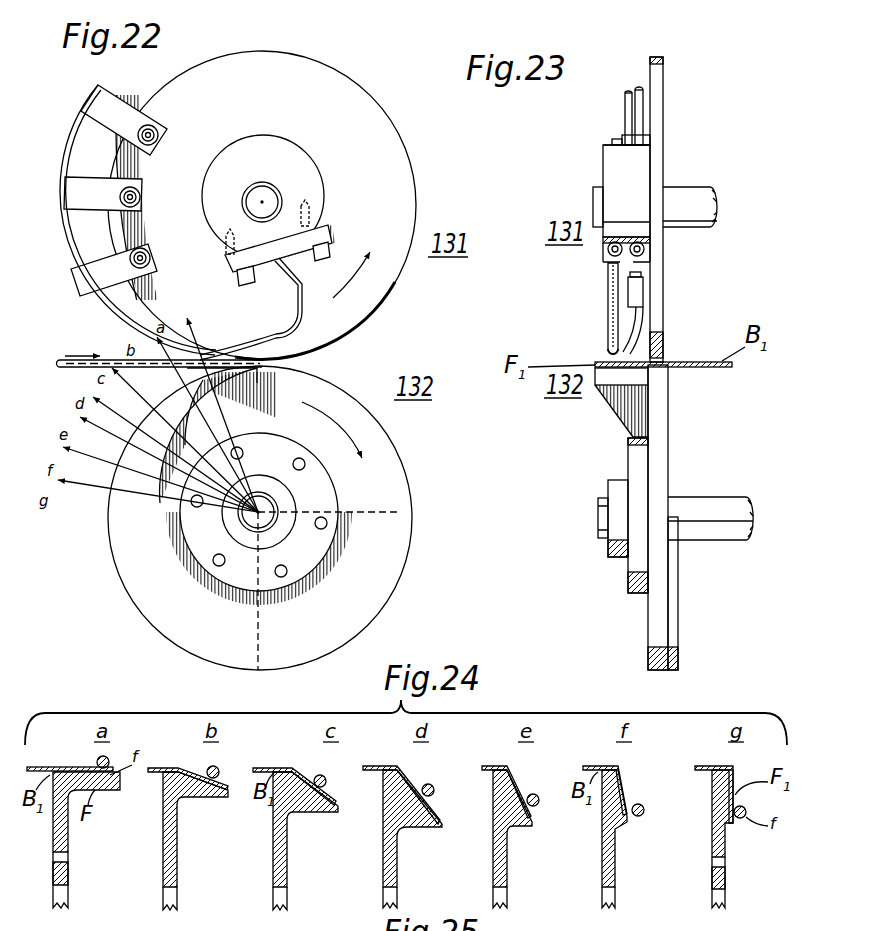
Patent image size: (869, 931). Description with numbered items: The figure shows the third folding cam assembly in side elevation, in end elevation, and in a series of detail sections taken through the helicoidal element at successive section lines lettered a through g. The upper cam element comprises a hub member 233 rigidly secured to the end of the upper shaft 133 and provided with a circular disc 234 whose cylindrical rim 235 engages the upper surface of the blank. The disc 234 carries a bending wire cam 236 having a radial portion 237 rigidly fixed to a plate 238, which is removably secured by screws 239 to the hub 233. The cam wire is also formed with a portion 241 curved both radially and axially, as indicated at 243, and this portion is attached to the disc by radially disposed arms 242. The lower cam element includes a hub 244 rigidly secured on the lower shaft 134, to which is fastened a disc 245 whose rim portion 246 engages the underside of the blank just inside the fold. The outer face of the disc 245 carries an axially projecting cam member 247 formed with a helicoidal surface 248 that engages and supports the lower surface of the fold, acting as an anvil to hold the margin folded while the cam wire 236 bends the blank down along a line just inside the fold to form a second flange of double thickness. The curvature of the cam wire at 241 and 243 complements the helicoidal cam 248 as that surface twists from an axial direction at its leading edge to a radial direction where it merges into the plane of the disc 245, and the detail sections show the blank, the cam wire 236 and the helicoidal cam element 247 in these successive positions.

In FIG. 22, the upper shaft 133 is at (264, 192).
In FIG. 23, the upper shaft 133 is at (698, 197).
In FIG. 22, the lower shaft 134 is at (268, 523).
In FIG. 23, the lower shaft 134 is at (722, 513).
In FIG. 22, the hub member 233 is at (311, 178).
In FIG. 23, the hub member 233 is at (612, 167).
In FIG. 22, the circular disc 234 is at (391, 129).
In FIG. 23, the circular disc 234 is at (657, 106).
In FIG. 22, the cylindrical rim 235 is at (415, 186).
In FIG. 23, the cylindrical rim 235 is at (660, 56).
In FIG. 22, the bending wire cam 236 is at (303, 324).
In FIG. 23, the bending wire cam 236 is at (606, 356).
In FIG. 24, the bending wire cam 236 is at (97, 762).
In FIG. 22, the radial portion 237 is at (300, 275).
In FIG. 23, the radial portion 237 is at (611, 313).
In FIG. 22, the plate 238 is at (263, 258).
In FIG. 23, the plate 238 is at (605, 266).
In FIG. 22, the screws 239 is at (308, 206).
In FIG. 23, the screws 239 is at (645, 251).
In FIG. 22, the curved portion 241 is at (118, 312).
In FIG. 23, the curved portion 241 is at (640, 298).
In FIG. 22, the radially disposed arms 242 is at (80, 195).
In FIG. 23, the axial curvature 243 is at (646, 362).
In FIG. 22, the hub 244 is at (333, 508).
In FIG. 23, the hub 244 is at (635, 566).
In FIG. 22, the disc 245 is at (398, 471).
In FIG. 23, the disc 245 is at (662, 431).
In FIG. 24, the disc 245 is at (75, 845).
In FIG. 23, the rim portion 246 is at (655, 672).
In FIG. 22, the cam member 247 is at (258, 375).
In FIG. 23, the cam member 247 is at (612, 379).
In FIG. 24, the cam member 247 is at (112, 792).
In FIG. 22, the helicoidal surface 248 is at (172, 382).
In FIG. 24, the helicoidal surface 248 is at (185, 805).